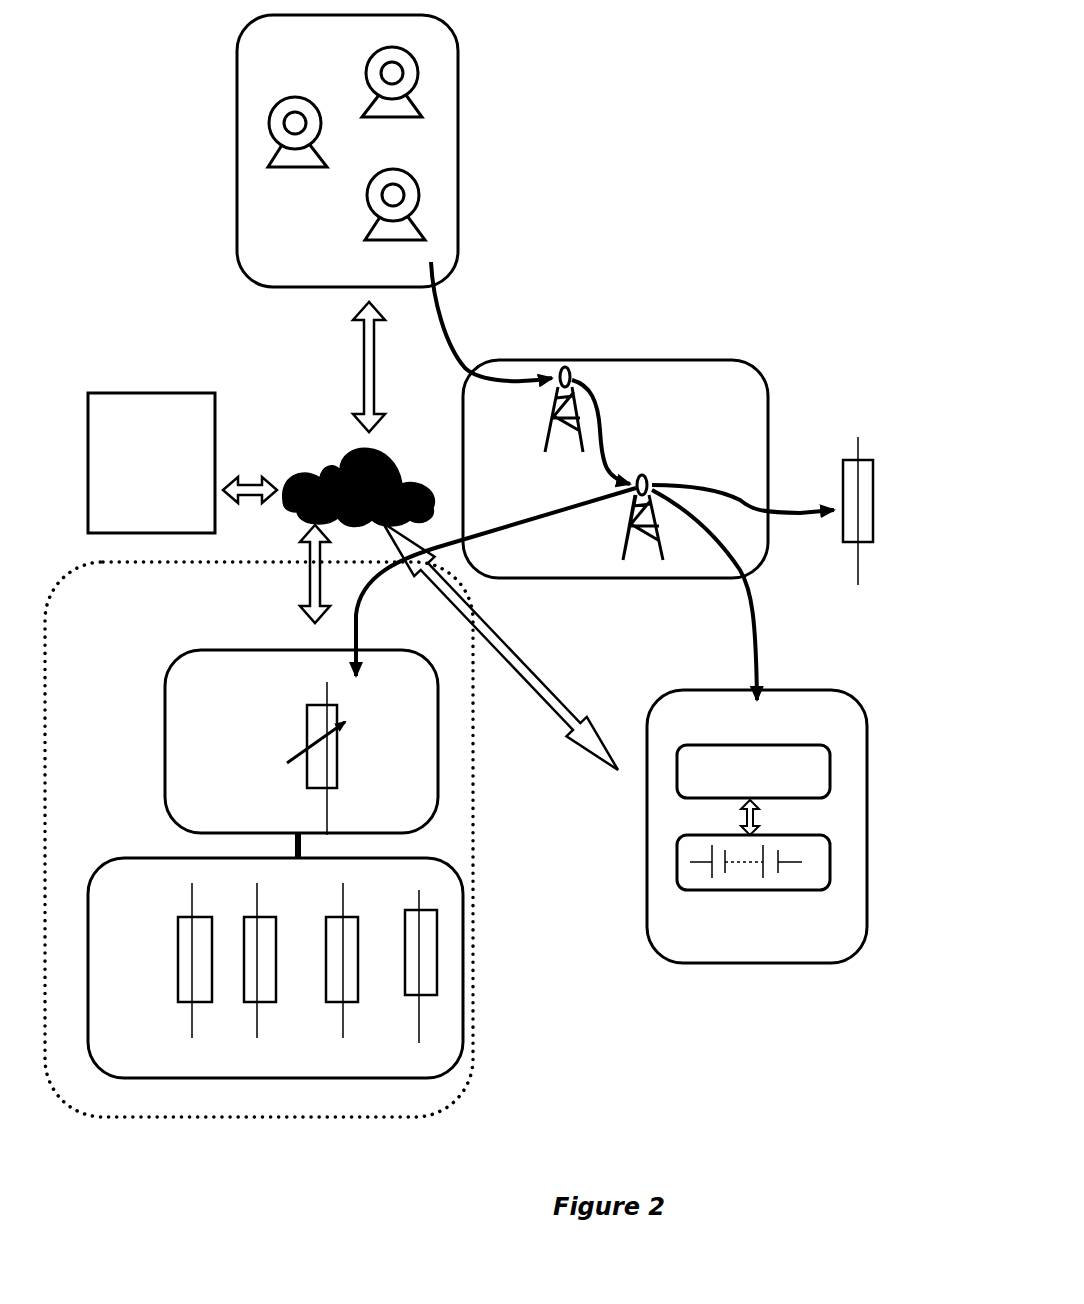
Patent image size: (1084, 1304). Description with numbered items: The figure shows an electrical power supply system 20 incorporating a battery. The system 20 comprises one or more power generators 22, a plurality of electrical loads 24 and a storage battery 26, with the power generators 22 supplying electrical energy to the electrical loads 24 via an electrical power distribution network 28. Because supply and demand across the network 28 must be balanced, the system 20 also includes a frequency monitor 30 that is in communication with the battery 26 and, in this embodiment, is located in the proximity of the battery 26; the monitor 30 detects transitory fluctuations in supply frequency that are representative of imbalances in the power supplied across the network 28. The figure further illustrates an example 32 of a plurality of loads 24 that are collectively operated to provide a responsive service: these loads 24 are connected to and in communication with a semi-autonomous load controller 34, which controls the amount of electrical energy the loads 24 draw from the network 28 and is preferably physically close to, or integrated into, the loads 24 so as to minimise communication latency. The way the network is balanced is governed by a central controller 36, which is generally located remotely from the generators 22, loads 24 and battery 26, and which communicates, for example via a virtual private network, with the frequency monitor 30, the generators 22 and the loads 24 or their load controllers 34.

The electrical power supply system 20 is at (945, 494).
The power generators 22 is at (347, 151).
The electrical loads 24 is at (502, 757).
The storage battery 26 is at (757, 826).
The electrical power distribution network 28 is at (615, 469).
The frequency monitor 30 is at (753, 771).
The example of a plurality of loads 32 is at (259, 839).
The semi-autonomous load controller 34 is at (301, 754).
The central controller 36 is at (151, 463).